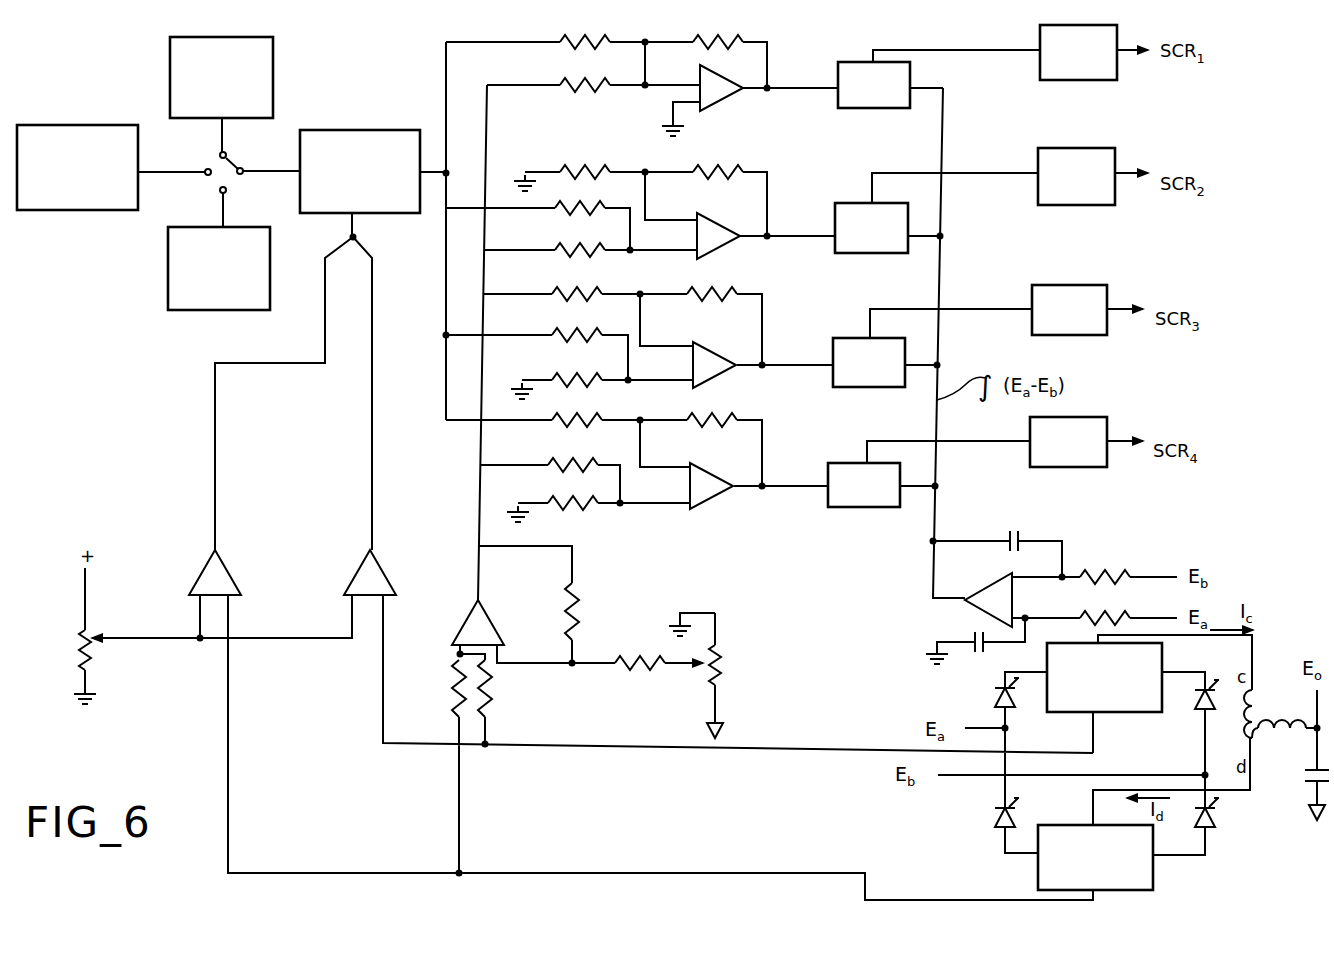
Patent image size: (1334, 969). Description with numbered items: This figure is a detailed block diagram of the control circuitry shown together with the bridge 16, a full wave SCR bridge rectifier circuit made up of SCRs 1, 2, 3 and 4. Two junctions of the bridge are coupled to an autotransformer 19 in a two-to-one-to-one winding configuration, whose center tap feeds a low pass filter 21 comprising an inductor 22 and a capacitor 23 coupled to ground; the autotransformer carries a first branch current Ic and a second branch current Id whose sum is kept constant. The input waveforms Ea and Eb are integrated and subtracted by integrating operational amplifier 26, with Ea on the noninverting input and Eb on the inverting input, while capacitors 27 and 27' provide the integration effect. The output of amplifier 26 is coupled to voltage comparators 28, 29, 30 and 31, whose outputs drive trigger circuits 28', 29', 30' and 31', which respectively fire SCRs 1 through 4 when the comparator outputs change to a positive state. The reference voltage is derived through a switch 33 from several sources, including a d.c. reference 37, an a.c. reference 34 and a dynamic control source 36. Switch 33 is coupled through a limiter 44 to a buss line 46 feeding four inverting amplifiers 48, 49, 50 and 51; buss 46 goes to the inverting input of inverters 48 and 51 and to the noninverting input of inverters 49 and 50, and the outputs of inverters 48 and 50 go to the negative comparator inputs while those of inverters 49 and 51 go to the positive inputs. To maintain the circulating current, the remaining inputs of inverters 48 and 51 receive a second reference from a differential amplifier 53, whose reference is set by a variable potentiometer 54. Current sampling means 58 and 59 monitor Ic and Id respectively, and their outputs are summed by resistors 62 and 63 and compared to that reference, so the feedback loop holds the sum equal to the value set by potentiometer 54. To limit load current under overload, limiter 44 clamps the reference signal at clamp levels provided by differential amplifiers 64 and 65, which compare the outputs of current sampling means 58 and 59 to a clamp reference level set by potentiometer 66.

The SCR 1 is at (1014, 701).
The SCR 2 is at (1213, 703).
The SCR 3 is at (1213, 821).
The SCR 4 is at (1012, 821).
The bridge regulator 16 is at (1071, 754).
The autotransformer 19 is at (1258, 688).
The low pass filter 21 is at (1302, 712).
The inductor 22 is at (1302, 735).
The capacitor 23 is at (1305, 781).
The integrating operational amplifier 26 is at (977, 606).
The capacitor 27 is at (1032, 535).
The capacitor 27' is at (980, 654).
The voltage comparator 28 is at (874, 103).
The voltage comparator 29 is at (871, 245).
The voltage comparator 30 is at (869, 380).
The voltage comparator 31 is at (864, 503).
The trigger circuit 28' is at (1078, 68).
The trigger circuit 29' is at (1076, 193).
The trigger circuit 30' is at (1069, 327).
The trigger circuit 31' is at (1073, 458).
The switch 33 is at (231, 160).
The AC reference 34 is at (240, 37).
The dynamic control source 36 is at (96, 212).
The d.c. reference 37 is at (262, 312).
The limiter 44 is at (355, 130).
The buss line 46 is at (446, 58).
The inverting amplifier 48 is at (722, 99).
The inverting amplifier 49 is at (720, 248).
The inverting amplifier 50 is at (716, 377).
The inverting amplifier 51 is at (713, 498).
The differential amplifier 53 is at (468, 615).
The variable potentiometer 54 is at (722, 658).
The current sampling means 58 is at (1075, 642).
The current sampling means 59 is at (1038, 880).
The resistor 62 is at (498, 703).
The resistor 63 is at (452, 693).
The differential amplifier 64 is at (362, 563).
The differential amplifier 65 is at (202, 564).
The potentiometer 66 is at (76, 648).